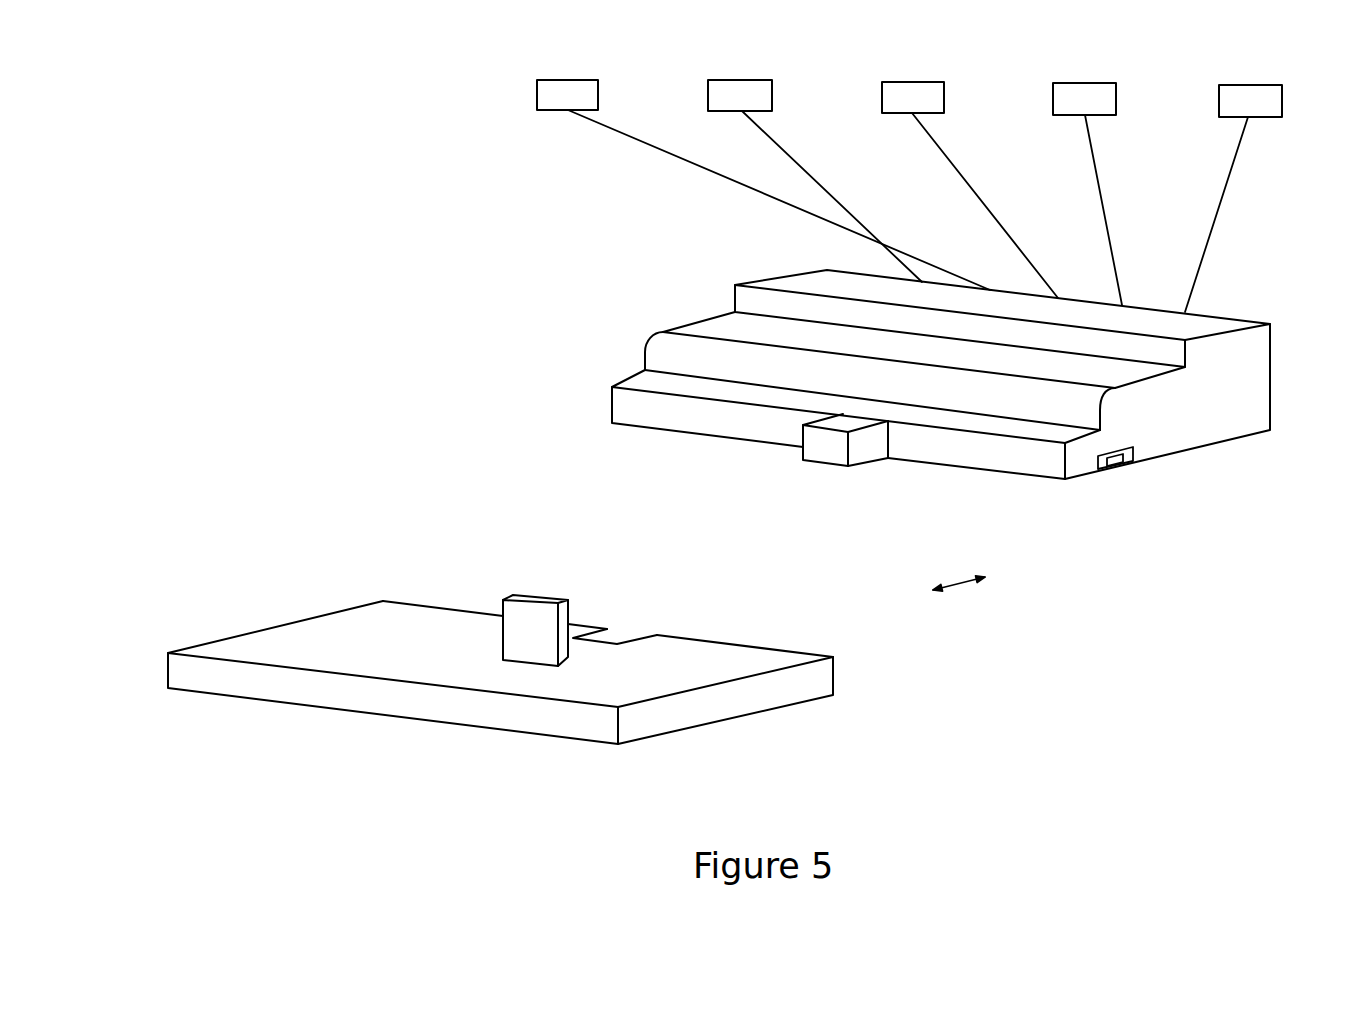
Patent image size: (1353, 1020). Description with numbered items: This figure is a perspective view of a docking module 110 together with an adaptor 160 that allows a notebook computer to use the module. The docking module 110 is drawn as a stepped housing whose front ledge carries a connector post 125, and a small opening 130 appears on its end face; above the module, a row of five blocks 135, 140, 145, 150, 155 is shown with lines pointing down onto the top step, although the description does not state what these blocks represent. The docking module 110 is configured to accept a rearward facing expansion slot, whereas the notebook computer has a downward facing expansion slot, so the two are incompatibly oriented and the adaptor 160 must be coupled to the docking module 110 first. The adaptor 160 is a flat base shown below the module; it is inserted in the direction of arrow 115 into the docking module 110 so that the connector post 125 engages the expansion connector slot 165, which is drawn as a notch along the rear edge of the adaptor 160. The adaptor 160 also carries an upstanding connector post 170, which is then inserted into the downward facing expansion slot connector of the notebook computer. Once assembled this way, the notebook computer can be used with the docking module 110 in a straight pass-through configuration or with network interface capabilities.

The docking module 110 is at (1260, 288).
The arrow 115 is at (989, 610).
The connector post 125 is at (863, 468).
The port 130 is at (1147, 488).
The functional module 135 is at (763, 157).
The functional module 140 is at (815, 154).
The functional module 145 is at (970, 163).
The functional module 150 is at (1105, 168).
The functional module 155 is at (1251, 172).
The adaptor 160 is at (400, 590).
The expansion connector slot 165 is at (640, 617).
The connector post 170 is at (503, 618).